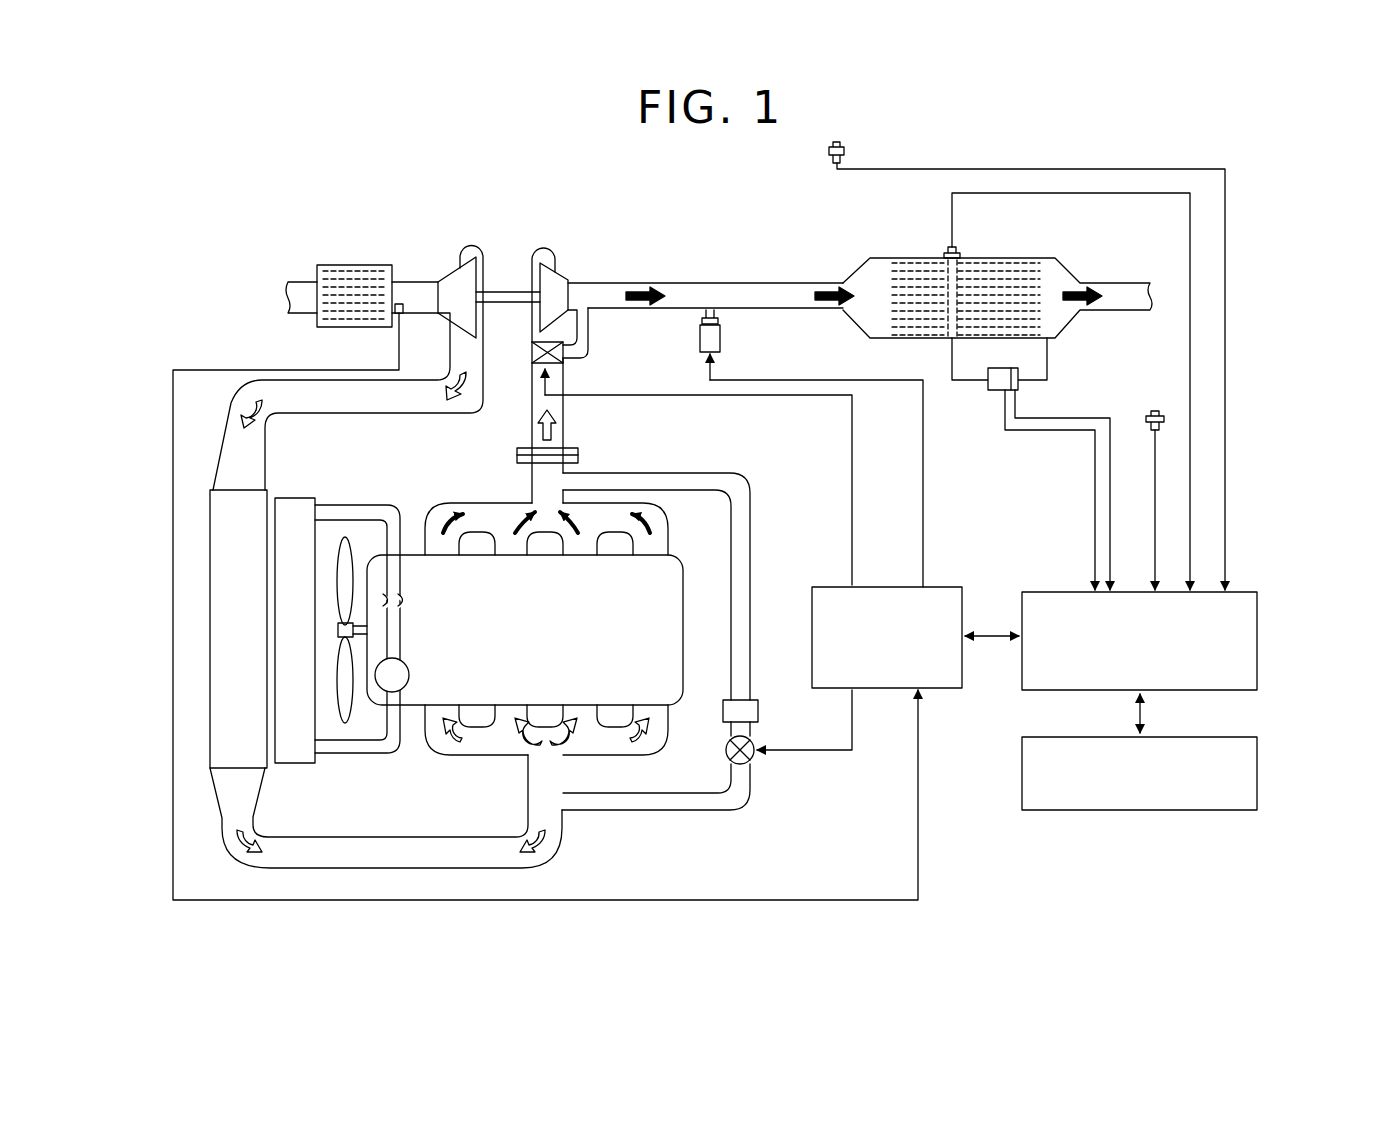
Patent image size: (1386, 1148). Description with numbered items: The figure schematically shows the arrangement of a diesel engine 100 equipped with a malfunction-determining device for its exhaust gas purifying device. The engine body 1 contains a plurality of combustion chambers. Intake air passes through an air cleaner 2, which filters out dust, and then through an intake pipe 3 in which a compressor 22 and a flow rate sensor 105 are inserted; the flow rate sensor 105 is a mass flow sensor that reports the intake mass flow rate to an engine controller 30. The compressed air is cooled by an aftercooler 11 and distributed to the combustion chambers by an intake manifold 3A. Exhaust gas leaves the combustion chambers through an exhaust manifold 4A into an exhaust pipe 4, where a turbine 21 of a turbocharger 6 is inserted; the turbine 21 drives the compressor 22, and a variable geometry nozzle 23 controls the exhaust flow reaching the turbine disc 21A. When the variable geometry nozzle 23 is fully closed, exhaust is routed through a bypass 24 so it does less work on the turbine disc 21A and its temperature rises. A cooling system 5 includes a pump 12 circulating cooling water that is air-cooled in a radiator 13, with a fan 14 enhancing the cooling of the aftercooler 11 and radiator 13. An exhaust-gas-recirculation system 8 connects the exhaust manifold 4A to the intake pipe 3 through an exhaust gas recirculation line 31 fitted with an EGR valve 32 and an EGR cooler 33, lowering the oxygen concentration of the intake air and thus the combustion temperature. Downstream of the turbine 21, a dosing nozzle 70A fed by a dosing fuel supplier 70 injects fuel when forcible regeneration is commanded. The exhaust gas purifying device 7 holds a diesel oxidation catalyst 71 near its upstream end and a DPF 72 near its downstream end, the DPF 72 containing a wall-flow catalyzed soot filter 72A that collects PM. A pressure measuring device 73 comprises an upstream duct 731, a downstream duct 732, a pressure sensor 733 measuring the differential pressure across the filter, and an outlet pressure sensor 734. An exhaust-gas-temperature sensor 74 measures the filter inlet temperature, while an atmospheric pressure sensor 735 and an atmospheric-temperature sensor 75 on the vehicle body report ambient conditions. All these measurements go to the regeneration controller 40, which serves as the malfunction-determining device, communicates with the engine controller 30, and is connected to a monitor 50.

The diesel engine 100 is at (318, 198).
The engine body 1 is at (670, 590).
The air cleaner 2 is at (364, 263).
The flow rate sensor 105 is at (401, 302).
The compressor 22 is at (473, 243).
The turbine 21 is at (548, 245).
The turbine disc 21A is at (572, 268).
The turbocharger 6 is at (570, 242).
The bypass 24 is at (592, 349).
The variable geometry nozzle 23 is at (540, 367).
The exhaust pipe 4 is at (566, 425).
The exhaust manifold 4A is at (482, 512).
The intake pipe 3 is at (400, 845).
The intake manifold 3A is at (470, 755).
The cooling system 5 is at (353, 488).
The aftercooler 11 is at (222, 740).
The pump 12 is at (410, 672).
The radiator 13 is at (295, 748).
The fan 14 is at (346, 566).
The exhaust-gas-recirculation system 8 is at (766, 487).
The exhaust gas recirculation line 31 is at (690, 473).
The EGR valve 32 is at (746, 766).
The EGR cooler 33 is at (760, 709).
The engine controller 30 is at (941, 586).
The regeneration controller 40 is at (1258, 638).
The monitor 50 is at (1258, 776).
The exhaust gas purifying device 7 is at (850, 232).
The diesel oxidation catalyst 71 is at (921, 258).
The DPF 72 is at (1020, 258).
The catalyzed soot filter 72A is at (1022, 278).
The exhaust-gas-temperature sensor 74 is at (955, 247).
The dosing fuel supplier 70 is at (722, 340).
The dosing nozzle 70A is at (712, 300).
The pressure measuring device 73 is at (972, 438).
The duct 731 is at (957, 381).
The duct 732 is at (1047, 380).
The pressure sensor 733 is at (997, 391).
The outlet pressure sensor 734 is at (1017, 391).
The atmospheric pressure sensor 735 is at (1155, 410).
The atmospheric-temperature sensor 75 is at (846, 150).